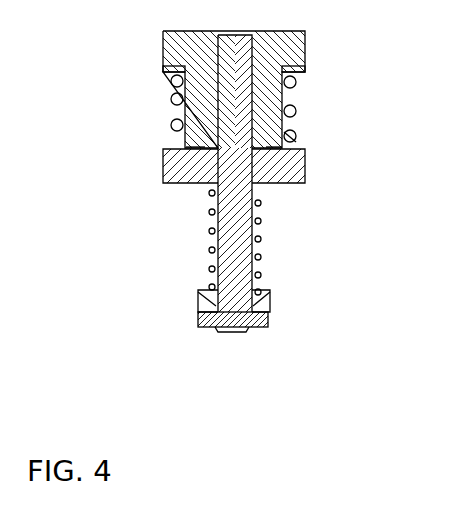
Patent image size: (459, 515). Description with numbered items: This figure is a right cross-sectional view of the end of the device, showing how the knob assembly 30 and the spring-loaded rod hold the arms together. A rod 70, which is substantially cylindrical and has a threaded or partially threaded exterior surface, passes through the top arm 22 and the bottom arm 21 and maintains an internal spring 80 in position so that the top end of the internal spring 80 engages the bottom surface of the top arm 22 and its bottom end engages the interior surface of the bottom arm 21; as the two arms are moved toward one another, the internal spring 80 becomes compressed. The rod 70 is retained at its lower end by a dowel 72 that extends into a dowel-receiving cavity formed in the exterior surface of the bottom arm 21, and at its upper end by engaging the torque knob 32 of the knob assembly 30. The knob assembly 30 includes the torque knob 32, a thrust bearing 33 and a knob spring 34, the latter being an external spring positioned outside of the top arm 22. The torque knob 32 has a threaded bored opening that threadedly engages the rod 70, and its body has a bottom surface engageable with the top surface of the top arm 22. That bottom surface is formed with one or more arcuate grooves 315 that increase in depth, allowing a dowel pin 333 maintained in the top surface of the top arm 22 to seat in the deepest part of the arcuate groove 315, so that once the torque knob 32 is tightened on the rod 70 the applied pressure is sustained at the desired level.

The knob assembly 30 is at (110, 109).
The torque knob 32 is at (282, 50).
The thrust bearing 33 is at (286, 69).
The knob spring 34 is at (293, 137).
The dowel pin 333 is at (276, 147).
The arcuate groove 315 is at (190, 151).
The top arm 22 is at (290, 167).
The internal spring 80 is at (258, 218).
The rod 70 is at (240, 260).
The bottom arm 21 is at (270, 305).
The dowel 72 is at (258, 317).